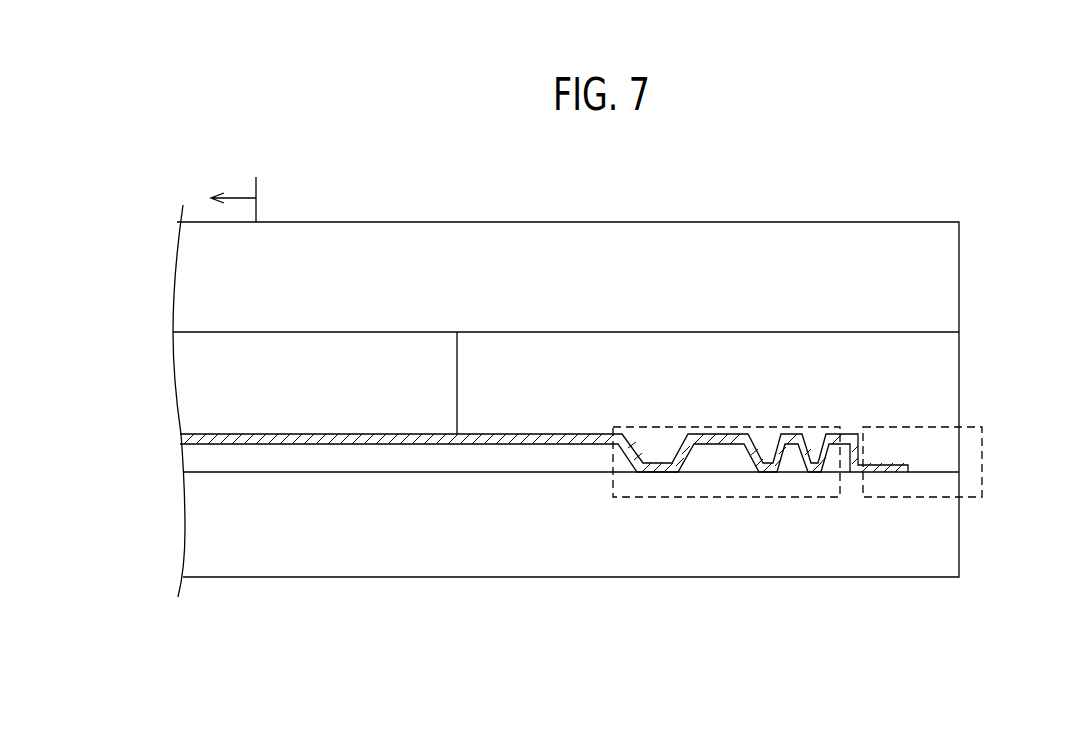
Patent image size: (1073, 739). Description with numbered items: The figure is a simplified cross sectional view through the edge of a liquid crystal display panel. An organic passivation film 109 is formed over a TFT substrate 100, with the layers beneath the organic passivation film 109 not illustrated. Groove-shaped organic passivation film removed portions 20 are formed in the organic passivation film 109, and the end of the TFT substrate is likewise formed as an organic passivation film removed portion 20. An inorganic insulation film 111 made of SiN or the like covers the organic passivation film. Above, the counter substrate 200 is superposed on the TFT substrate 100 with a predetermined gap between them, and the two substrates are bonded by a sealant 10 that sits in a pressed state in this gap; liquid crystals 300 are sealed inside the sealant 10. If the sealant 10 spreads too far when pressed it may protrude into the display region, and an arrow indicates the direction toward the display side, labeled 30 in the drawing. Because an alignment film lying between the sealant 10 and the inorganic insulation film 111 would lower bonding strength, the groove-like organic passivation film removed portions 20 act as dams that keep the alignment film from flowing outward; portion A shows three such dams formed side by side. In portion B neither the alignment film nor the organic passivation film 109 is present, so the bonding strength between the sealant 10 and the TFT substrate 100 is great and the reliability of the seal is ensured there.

The counter substrate 200 is at (947, 243).
The sealant 10 is at (947, 357).
The liquid crystals 300 is at (205, 376).
The direction toward display area 30 is at (233, 190).
The organic passivation film removed portion 20 is at (653, 442).
The inorganic insulation film 111 is at (893, 462).
The organic passivation film 109 is at (442, 462).
The TFT substrate 100 is at (945, 532).
The portion A is at (695, 498).
The portion B is at (905, 498).